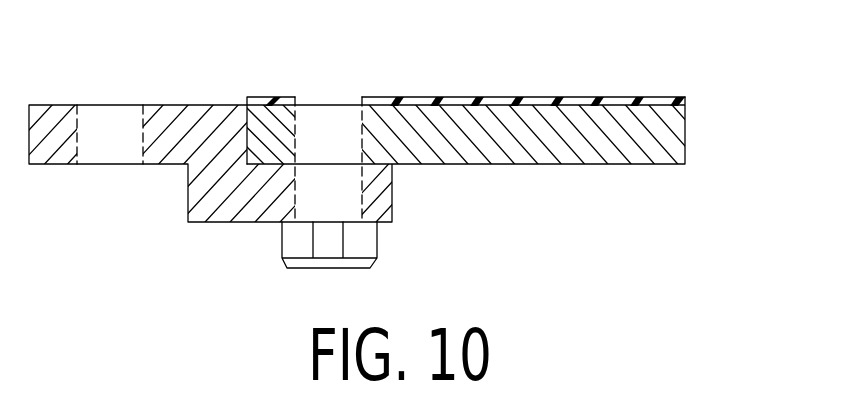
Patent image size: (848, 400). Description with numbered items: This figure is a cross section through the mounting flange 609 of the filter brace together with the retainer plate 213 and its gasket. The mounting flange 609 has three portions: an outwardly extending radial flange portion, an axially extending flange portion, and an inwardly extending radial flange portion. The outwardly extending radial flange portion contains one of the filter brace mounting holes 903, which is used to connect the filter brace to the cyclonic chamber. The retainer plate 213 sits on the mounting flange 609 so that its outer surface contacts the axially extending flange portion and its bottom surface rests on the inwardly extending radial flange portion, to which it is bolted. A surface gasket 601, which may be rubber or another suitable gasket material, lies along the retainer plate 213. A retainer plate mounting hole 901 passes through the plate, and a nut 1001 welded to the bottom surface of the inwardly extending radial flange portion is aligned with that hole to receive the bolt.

The mounting flange 609 is at (45, 115).
The filter brace mounting hole 903 is at (107, 125).
The retainer plate mounting hole 901 is at (322, 127).
The surface gasket 601 is at (458, 102).
The retainer plate 213 is at (675, 132).
The nut 1001 is at (375, 258).